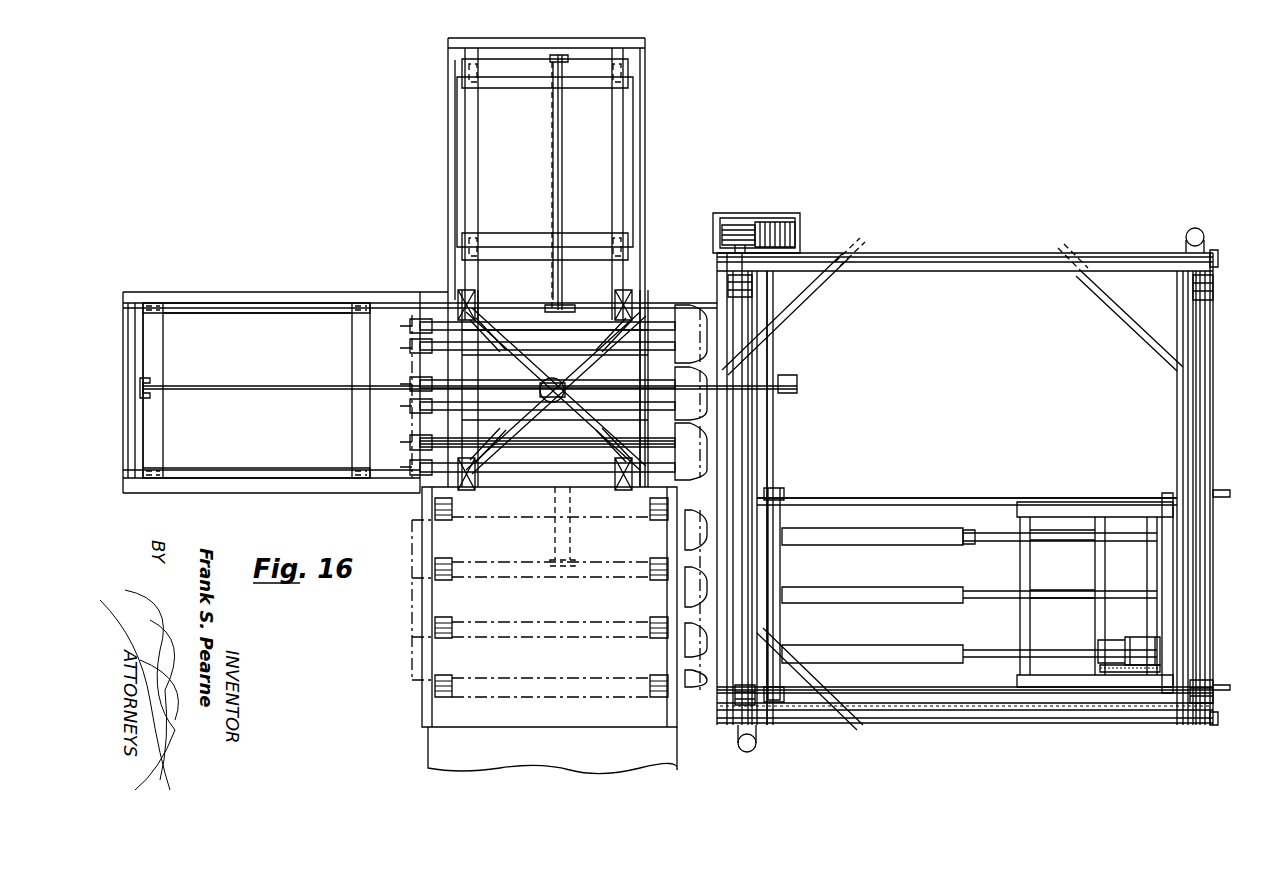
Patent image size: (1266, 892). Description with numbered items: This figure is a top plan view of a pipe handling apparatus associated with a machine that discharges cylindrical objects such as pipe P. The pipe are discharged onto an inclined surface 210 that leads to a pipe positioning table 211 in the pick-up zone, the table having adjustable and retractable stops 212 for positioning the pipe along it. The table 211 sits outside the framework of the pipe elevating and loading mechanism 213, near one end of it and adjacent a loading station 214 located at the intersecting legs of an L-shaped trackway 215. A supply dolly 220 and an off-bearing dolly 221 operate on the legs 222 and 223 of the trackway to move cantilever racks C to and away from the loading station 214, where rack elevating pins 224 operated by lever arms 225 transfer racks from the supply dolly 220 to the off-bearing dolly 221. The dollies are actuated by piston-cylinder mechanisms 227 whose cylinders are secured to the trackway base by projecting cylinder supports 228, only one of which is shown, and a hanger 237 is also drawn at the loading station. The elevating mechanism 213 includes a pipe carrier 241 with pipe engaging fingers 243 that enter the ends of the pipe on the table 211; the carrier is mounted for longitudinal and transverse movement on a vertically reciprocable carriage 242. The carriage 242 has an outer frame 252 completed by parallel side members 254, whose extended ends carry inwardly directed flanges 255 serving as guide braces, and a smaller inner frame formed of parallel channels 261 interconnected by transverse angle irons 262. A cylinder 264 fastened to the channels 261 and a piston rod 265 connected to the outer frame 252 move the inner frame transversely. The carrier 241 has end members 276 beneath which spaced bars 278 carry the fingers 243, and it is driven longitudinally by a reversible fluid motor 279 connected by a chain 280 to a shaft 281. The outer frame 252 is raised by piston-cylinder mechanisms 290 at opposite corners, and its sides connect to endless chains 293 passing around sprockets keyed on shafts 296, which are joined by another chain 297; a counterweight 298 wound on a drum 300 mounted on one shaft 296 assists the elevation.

The inclined surface 210 is at (440, 752).
The pipe positioning table 211 is at (568, 710).
The adjustable and retractable stops 212 is at (652, 520).
The pipe elevating and loading mechanism 213 is at (1080, 371).
The loading station 214 is at (652, 312).
The L-shaped trackway 215 is at (420, 292).
The supply dolly 220 is at (282, 300).
The off-bearing dolly 221 is at (458, 125).
The trackway leg 222 is at (130, 455).
The trackway leg 223 is at (528, 40).
The rack elevating pins 224 is at (465, 300).
The lever arms 225 is at (516, 322).
The piston-cylinder mechanisms 227 is at (558, 190).
The projecting cylinder supports 228 is at (800, 384).
The hanger 237 is at (555, 510).
The pipe carrier 241 is at (1050, 500).
The vertically reciprocable carriage 242 is at (895, 490).
The pipe engaging fingers 243 is at (900, 590).
The outer frame 252 is at (1012, 253).
The side members 254 is at (935, 253).
The inwardly directed flanges 255 is at (1216, 255).
The parallel channels 261 is at (905, 690).
The angle irons 262 is at (1172, 496).
The cylinder 264 is at (782, 522).
The piston rod 265 is at (772, 447).
The end members 276 is at (1030, 580).
The bars 278 is at (975, 530).
The reversible fluid motor 279 is at (1140, 640).
The chain 280 is at (1130, 672).
The shaft 281 is at (1160, 510).
The piston-cylinder mechanisms 290 is at (1195, 226).
The endless chains 293 is at (752, 288).
The shafts 296 is at (750, 372).
The chain 297 is at (950, 712).
The counterweight 298 is at (795, 218).
The drum 300 is at (745, 228).
The pipe P is at (413, 348).
The cantilever racks C is at (413, 443).